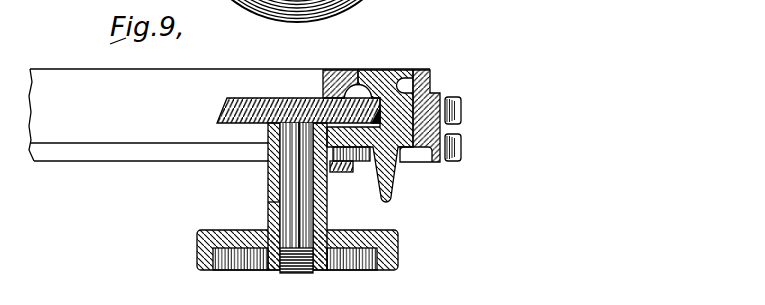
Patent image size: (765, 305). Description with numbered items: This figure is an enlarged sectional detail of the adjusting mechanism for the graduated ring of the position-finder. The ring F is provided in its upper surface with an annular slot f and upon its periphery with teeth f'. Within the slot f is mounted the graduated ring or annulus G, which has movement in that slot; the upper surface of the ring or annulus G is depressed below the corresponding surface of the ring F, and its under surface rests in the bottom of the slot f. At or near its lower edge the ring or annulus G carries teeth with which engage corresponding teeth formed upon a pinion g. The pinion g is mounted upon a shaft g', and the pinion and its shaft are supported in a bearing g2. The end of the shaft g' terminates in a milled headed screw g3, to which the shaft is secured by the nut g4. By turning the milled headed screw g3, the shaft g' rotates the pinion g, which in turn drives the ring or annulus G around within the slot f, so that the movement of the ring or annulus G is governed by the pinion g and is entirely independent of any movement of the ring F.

The pinion g is at (285, 107).
The shaft g' is at (318, 196).
The bearing g2 is at (268, 196).
The milled headed screw g3 is at (409, 252).
The nut g4 is at (308, 273).
The annular slot f is at (340, 69).
The teeth f' is at (461, 129).
The ring F is at (432, 88).
The graduated ring or annulus G is at (382, 70).